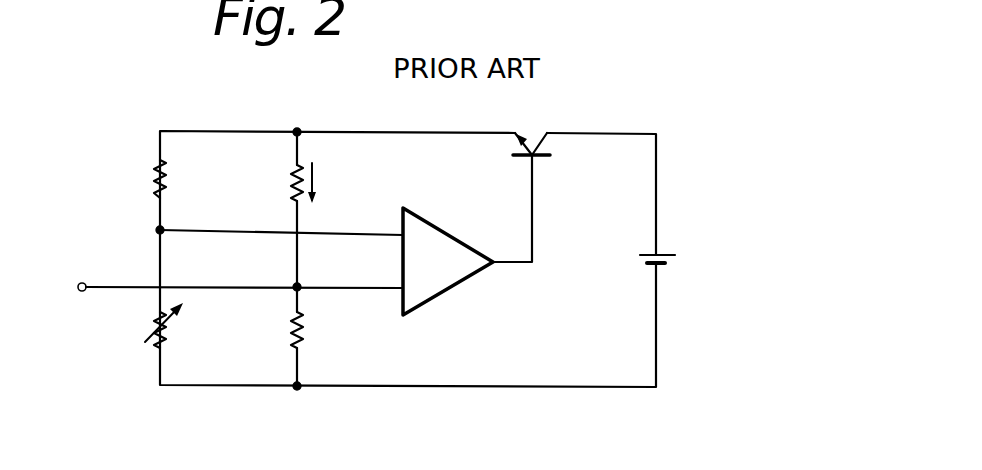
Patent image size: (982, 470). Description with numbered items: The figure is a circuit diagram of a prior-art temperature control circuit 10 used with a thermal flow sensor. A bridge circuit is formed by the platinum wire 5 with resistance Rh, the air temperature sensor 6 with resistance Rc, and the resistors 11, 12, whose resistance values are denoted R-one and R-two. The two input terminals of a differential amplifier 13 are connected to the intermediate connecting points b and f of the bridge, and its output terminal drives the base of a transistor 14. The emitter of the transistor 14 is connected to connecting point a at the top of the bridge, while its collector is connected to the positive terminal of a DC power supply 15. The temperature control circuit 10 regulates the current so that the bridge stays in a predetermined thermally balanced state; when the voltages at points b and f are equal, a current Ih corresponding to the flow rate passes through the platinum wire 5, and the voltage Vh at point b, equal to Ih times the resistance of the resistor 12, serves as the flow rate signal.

The platinum wire 5 is at (293, 174).
The air temperature sensor 6 is at (157, 174).
The temperature control circuit 10 is at (407, 417).
The resistor 11 is at (151, 325).
The resistor 12 is at (304, 327).
The differential amplifier 13 is at (432, 218).
The transistor 14 is at (530, 143).
The DC power supply 15 is at (663, 250).